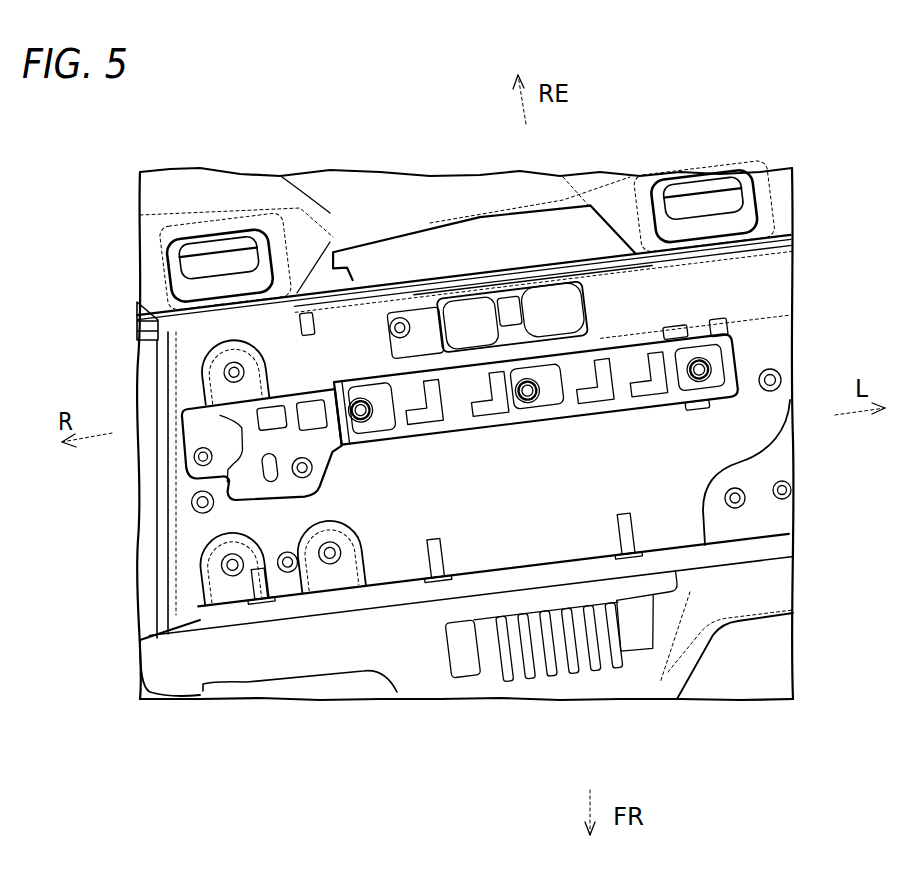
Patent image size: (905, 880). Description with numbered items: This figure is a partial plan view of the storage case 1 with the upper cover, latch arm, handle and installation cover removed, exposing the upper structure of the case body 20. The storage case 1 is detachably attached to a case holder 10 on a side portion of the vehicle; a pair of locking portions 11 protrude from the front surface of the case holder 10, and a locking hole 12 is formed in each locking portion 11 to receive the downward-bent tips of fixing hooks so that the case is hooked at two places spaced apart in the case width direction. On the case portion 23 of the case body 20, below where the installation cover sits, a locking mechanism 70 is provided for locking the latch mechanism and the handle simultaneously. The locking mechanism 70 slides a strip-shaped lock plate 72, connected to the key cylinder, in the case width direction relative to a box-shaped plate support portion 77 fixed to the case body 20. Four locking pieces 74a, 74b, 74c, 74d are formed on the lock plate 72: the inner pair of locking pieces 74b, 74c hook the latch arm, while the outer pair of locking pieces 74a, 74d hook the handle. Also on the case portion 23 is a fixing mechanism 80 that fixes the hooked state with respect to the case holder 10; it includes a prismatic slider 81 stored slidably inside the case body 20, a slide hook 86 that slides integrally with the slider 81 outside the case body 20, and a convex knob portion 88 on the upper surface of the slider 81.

The storage case 1 is at (138, 712).
The case holder 10 is at (468, 187).
The locking portions 11 is at (787, 215).
The locking holes 12 is at (205, 230).
The case body 20 is at (150, 538).
The case portion 23 is at (767, 410).
The locking mechanism 70 is at (200, 397).
The lock plate 72 is at (620, 400).
The locking piece 74a is at (393, 355).
The locking piece 74b is at (473, 350).
The locking piece 74c is at (587, 350).
The locking piece 74d is at (643, 337).
The plate support portion 77 is at (697, 403).
The fixing mechanism 80 is at (423, 268).
The slider 81 is at (787, 297).
The slide hook 86 is at (558, 257).
The knob portion 88 is at (523, 263).